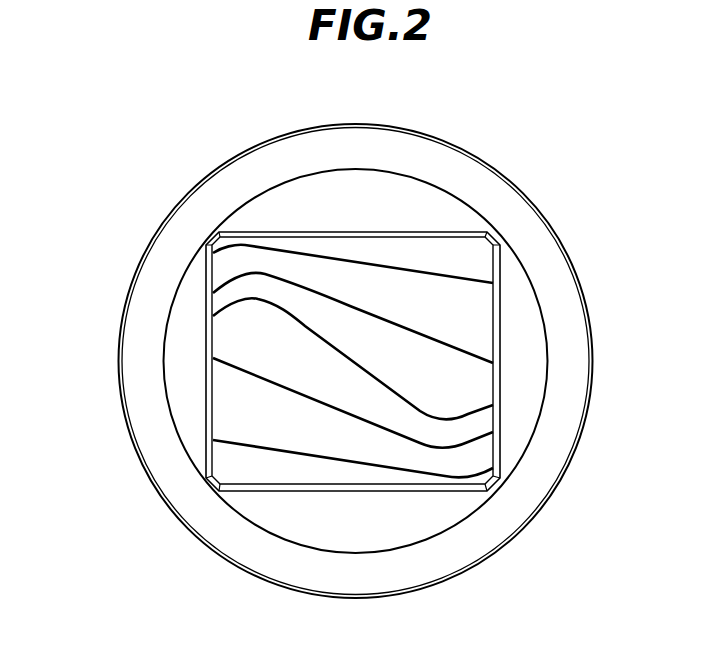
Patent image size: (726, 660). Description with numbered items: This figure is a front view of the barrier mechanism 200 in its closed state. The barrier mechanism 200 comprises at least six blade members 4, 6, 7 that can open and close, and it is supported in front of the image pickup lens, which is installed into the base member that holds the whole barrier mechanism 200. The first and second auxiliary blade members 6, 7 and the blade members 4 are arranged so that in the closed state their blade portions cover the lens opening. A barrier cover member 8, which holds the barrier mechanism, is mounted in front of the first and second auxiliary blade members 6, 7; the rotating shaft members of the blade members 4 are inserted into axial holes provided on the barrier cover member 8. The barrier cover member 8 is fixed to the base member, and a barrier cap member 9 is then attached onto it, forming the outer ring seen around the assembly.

The barrier mechanism 200 is at (246, 118).
The barrier cap member 9 is at (150, 272).
The barrier cover member 8 is at (397, 526).
The second auxiliary blade member 7 is at (348, 472).
The first auxiliary blade member 6 is at (350, 290).
The blade member 4 is at (452, 378).